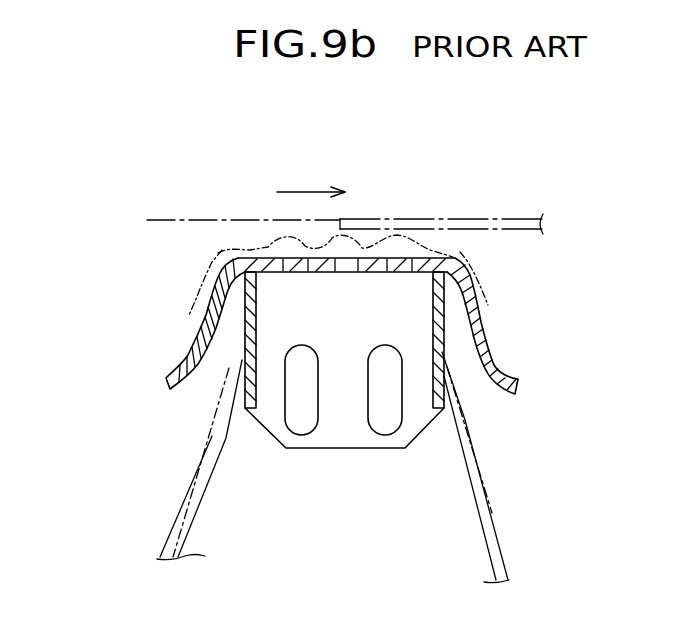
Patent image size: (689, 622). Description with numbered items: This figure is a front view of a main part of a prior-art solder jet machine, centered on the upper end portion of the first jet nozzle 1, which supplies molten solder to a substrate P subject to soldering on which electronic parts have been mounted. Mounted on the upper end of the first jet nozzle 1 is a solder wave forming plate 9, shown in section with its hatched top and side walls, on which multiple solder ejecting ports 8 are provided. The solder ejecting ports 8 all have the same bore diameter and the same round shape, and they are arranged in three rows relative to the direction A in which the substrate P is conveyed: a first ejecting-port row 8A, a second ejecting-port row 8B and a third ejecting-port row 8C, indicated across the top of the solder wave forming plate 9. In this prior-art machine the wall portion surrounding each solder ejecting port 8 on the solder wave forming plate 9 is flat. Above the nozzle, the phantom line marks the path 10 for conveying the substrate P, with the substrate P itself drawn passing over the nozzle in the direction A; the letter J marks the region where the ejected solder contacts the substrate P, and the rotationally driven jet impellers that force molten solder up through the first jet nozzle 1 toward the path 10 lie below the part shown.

The first jet nozzle 1 is at (547, 414).
The solder ejecting ports 8 is at (335, 300).
The first ejecting-port row 8A is at (287, 272).
The second ejecting-port row 8B is at (343, 272).
The third ejecting-port row 8C is at (440, 275).
The solder wave forming plate 9 is at (492, 340).
The path 10 is at (183, 220).
The gap J is at (273, 241).
The direction A is at (311, 178).
The substrate P is at (453, 220).